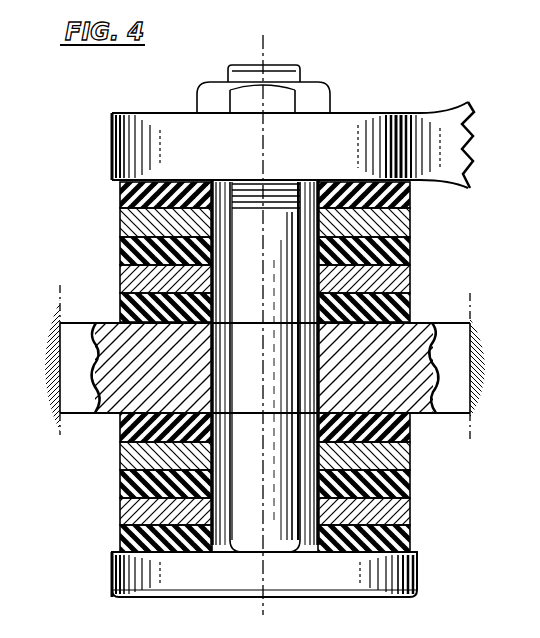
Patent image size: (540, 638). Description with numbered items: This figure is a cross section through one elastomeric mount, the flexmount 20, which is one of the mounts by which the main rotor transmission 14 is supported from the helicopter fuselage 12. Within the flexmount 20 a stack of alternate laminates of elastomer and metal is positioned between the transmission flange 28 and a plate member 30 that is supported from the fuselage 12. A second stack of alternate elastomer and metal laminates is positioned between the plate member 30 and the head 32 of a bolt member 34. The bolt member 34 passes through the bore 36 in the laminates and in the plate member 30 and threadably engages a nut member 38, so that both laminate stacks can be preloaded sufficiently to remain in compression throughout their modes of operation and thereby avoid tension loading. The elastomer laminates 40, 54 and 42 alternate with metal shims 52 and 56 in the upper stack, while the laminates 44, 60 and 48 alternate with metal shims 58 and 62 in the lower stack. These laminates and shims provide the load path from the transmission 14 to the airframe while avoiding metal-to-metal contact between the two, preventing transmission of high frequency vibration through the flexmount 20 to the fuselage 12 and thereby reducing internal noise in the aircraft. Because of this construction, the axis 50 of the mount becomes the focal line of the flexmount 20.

The flexmount 20 is at (141, 325).
The fuselage 12 is at (52, 400).
The main rotor transmission 14 is at (466, 161).
The transmission flange 28 is at (212, 161).
The plate member 30 is at (467, 364).
The head 32 is at (297, 580).
The bolt member 34 is at (234, 70).
The bore 36 is at (306, 188).
The nut member 38 is at (210, 97).
The laminate 40 is at (411, 198).
The laminate 42 is at (411, 305).
The laminate 44 is at (411, 430).
The laminate 48 is at (411, 540).
The axis 50 is at (262, 602).
The metal shim 52 is at (411, 222).
The laminate 54 is at (411, 250).
The metal shim 56 is at (411, 278).
The metal shim 58 is at (411, 458).
The laminate 60 is at (411, 487).
The metal shim 62 is at (411, 513).